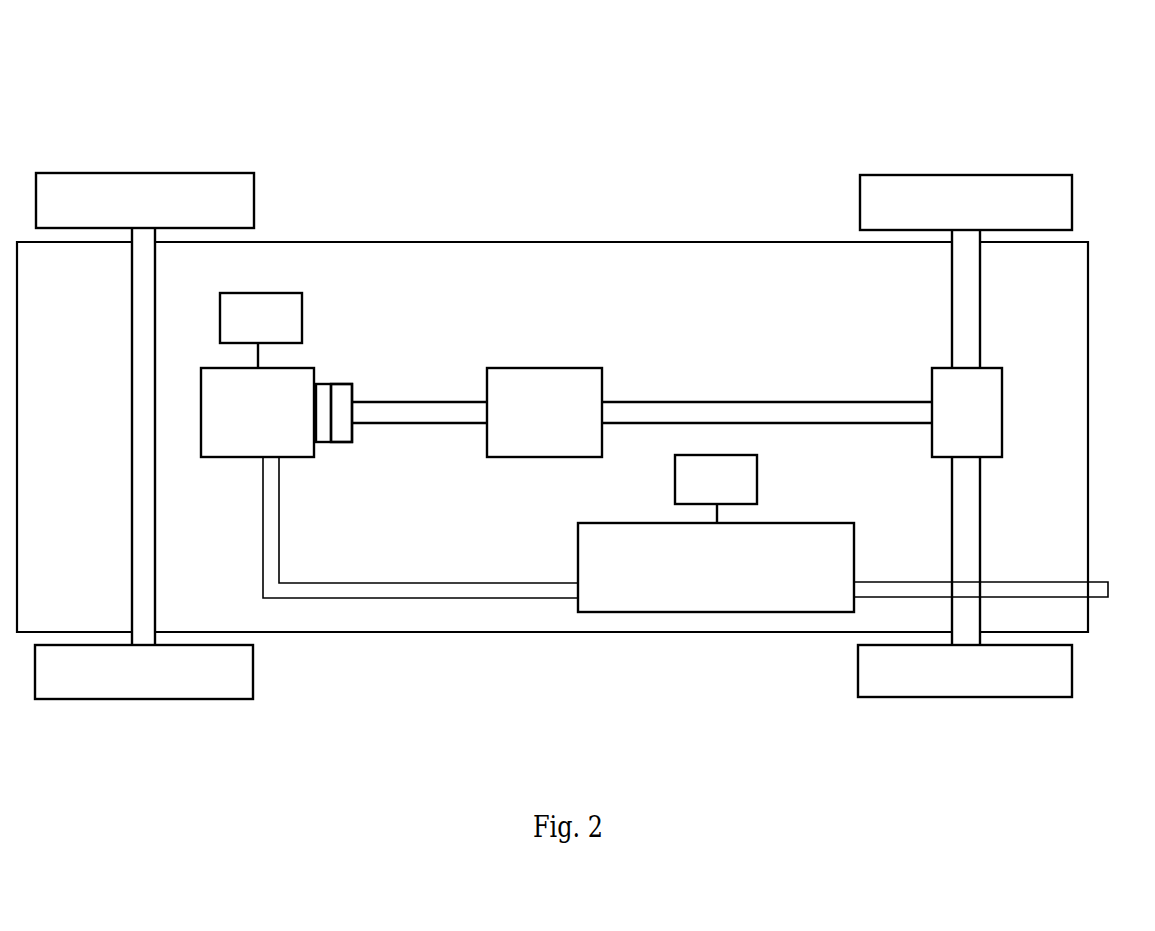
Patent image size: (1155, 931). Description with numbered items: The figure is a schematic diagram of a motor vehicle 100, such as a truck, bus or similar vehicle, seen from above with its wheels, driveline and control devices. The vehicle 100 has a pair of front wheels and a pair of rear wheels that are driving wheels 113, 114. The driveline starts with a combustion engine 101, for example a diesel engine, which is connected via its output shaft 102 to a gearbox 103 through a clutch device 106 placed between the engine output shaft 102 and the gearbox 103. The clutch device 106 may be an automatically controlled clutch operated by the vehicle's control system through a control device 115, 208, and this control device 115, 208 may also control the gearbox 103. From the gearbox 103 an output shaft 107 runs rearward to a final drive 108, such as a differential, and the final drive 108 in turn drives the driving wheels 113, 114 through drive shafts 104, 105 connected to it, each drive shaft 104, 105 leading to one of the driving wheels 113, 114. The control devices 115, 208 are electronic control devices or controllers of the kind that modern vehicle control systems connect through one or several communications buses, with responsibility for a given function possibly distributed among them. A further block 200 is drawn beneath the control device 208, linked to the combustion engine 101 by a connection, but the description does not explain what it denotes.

The motor vehicle 100 is at (552, 341).
The combustion engine 101 is at (233, 447).
The output shaft 102 is at (327, 396).
The gearbox 103 is at (547, 378).
The drive shaft 104 is at (970, 295).
The drive shaft 105 is at (975, 555).
The clutch device 106 is at (340, 433).
The output shaft 107 is at (855, 418).
The final drive 108 is at (997, 405).
The driving wheel 113 is at (1068, 193).
The driving wheel 114 is at (1067, 673).
The control device 115 is at (263, 328).
The control unit 200 is at (733, 605).
The control device 208 is at (730, 480).